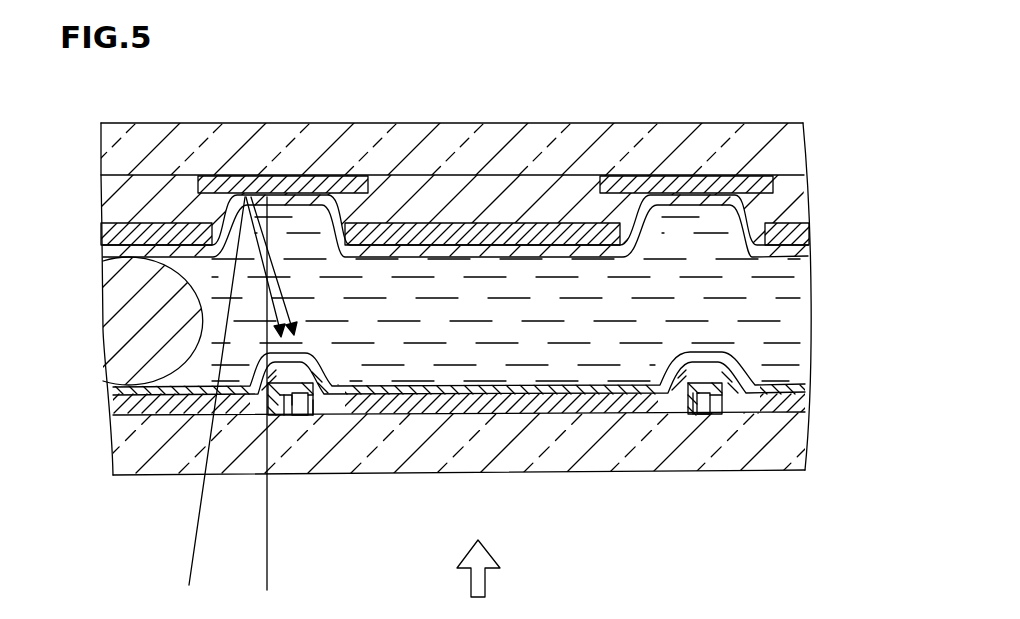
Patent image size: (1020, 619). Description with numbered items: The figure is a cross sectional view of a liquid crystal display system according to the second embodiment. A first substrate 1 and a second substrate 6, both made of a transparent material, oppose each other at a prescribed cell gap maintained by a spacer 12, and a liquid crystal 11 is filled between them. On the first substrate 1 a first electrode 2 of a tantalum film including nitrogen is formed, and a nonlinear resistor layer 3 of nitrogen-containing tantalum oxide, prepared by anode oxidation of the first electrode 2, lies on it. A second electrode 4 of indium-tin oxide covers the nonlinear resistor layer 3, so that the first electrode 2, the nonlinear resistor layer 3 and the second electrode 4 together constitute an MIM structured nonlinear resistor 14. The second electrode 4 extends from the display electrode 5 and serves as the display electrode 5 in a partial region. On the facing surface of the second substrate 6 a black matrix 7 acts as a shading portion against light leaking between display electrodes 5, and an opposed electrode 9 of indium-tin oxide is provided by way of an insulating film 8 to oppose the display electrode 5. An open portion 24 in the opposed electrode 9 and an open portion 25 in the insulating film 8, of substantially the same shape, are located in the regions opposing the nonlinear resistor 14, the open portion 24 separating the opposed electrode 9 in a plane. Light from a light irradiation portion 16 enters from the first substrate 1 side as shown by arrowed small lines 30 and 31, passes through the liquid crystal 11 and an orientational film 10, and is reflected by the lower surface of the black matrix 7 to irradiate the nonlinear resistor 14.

The first substrate 1 is at (797, 442).
The first electrode 2 is at (297, 416).
The nonlinear resistor layer 3 is at (312, 416).
The second electrode 4 is at (336, 372).
The display electrode 5 is at (511, 403).
The second substrate 6 is at (792, 141).
The black matrix 7 is at (345, 185).
The insulating film 8 is at (792, 200).
The opposed electrode 9 is at (565, 237).
The orientational film 10 is at (800, 247).
The liquid crystal 11 is at (780, 319).
The spacer 12 is at (122, 338).
The nonlinear resistor 14 is at (318, 357).
The light irradiation portion 16 is at (485, 583).
The open portion 24 is at (345, 245).
The open portion 25 is at (654, 210).
The arrowed small line 30 is at (196, 525).
The arrowed small line 31 is at (267, 563).